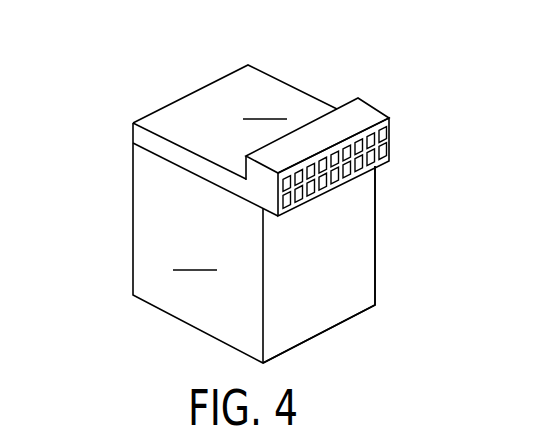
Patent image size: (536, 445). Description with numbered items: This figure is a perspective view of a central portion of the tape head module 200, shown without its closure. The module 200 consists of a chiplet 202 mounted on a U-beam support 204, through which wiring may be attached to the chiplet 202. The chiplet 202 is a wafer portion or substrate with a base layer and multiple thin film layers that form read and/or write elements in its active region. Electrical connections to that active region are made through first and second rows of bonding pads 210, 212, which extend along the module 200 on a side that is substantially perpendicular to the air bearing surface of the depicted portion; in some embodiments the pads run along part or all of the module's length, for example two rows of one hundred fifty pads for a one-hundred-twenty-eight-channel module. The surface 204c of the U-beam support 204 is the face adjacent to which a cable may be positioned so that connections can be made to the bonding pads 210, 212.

The tape head module 200 is at (133, 124).
The chiplet 202 is at (262, 183).
The U-beam support 204 is at (254, 253).
The surface of U-beam support 204c is at (355, 247).
The first row of bonding pads 210 is at (389, 158).
The second row of bonding pads 212 is at (389, 141).